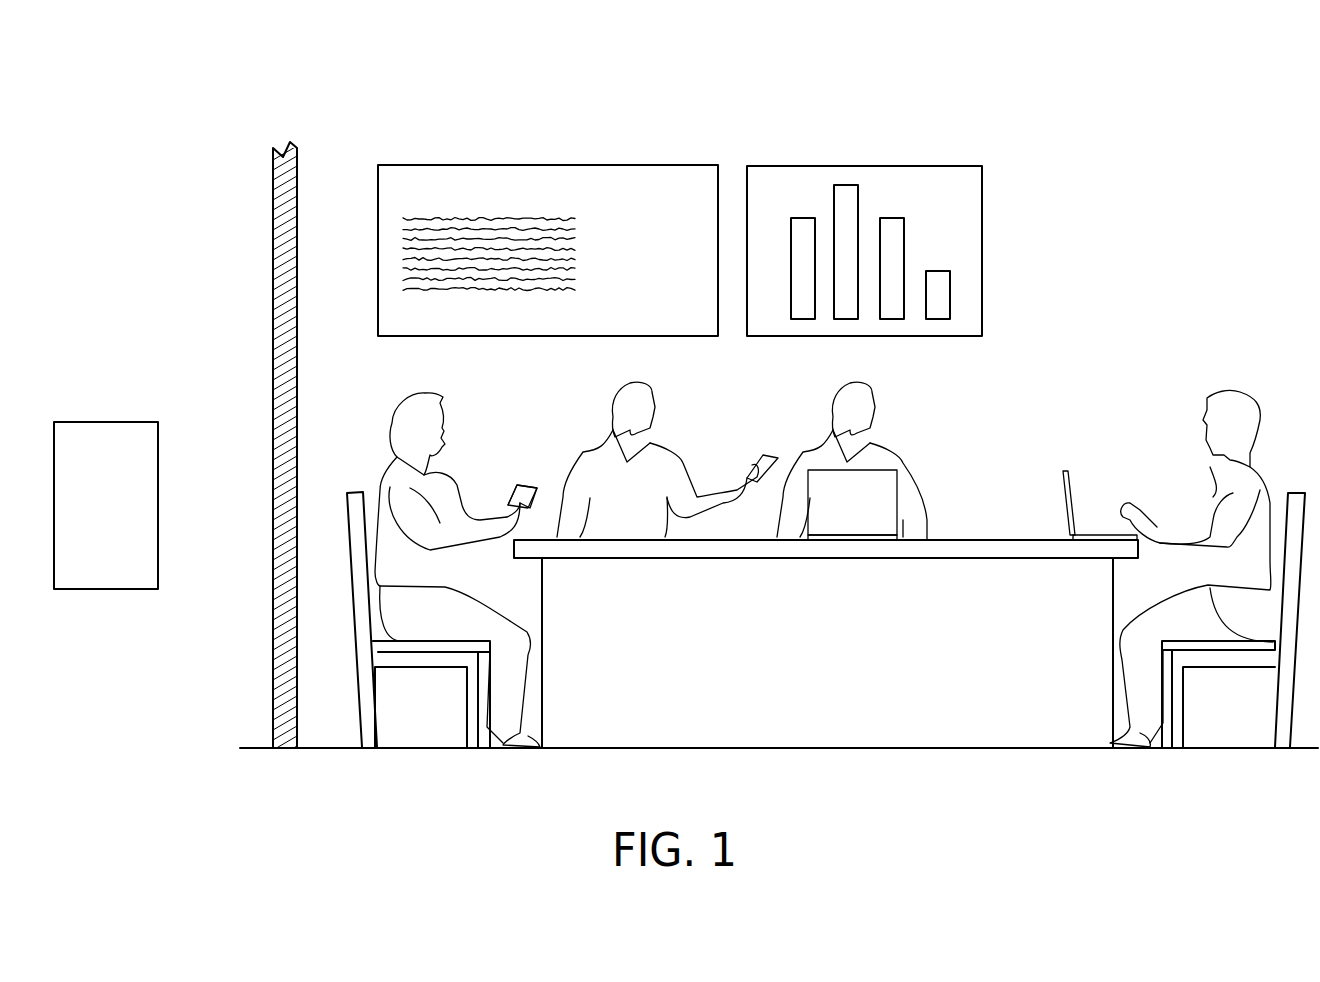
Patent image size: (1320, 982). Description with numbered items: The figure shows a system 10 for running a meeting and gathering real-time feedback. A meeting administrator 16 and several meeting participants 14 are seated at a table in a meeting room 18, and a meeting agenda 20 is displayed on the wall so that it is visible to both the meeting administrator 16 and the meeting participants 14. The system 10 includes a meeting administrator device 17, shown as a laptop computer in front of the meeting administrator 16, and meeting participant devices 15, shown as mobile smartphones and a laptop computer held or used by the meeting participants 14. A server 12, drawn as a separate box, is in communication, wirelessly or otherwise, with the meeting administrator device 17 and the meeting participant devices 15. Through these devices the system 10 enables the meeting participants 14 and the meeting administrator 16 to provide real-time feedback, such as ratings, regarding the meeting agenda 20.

The system 10 is at (221, 395).
The server 12 is at (106, 505).
The meeting participants 14 is at (390, 418).
The meeting participant devices 15 is at (515, 480).
The meeting administrator 16 is at (1250, 400).
The meeting administrator device 17 is at (1082, 498).
The meeting room 18 is at (1130, 261).
The meeting agenda 20 is at (439, 211).